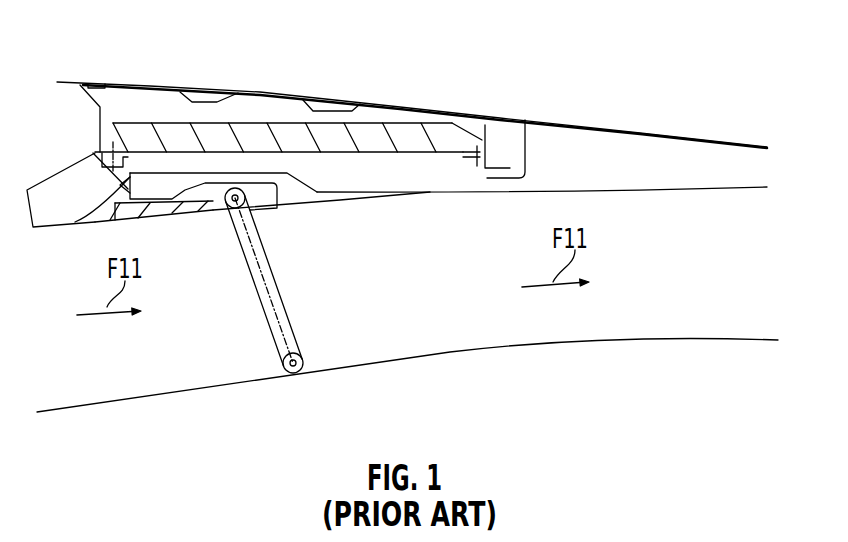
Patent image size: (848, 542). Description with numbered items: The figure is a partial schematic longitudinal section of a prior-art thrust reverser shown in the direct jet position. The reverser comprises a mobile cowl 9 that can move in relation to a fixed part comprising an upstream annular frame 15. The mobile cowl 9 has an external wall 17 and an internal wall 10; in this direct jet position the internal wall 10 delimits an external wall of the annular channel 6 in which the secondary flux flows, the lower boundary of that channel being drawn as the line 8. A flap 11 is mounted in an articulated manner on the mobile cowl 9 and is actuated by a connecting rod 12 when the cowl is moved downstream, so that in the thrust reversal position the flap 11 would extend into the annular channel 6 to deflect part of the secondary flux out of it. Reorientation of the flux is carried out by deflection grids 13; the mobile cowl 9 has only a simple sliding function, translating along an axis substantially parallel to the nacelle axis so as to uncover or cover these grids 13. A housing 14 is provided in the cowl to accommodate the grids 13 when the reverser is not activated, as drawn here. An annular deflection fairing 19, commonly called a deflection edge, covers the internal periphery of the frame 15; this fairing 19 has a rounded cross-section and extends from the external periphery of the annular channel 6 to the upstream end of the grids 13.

The annular channel 6 is at (500, 288).
The inner fixed structure / engine casing 8 is at (162, 384).
The mobile cowl 9 is at (593, 150).
The internal wall 10 is at (633, 192).
The flap 11 is at (163, 208).
The connecting rod 12 is at (278, 323).
The deflection grids 13 is at (285, 140).
The housing 14 is at (407, 173).
The upstream annular frame 15 is at (100, 124).
The external wall 17 is at (417, 108).
The annular deflection fairing 19 is at (53, 225).